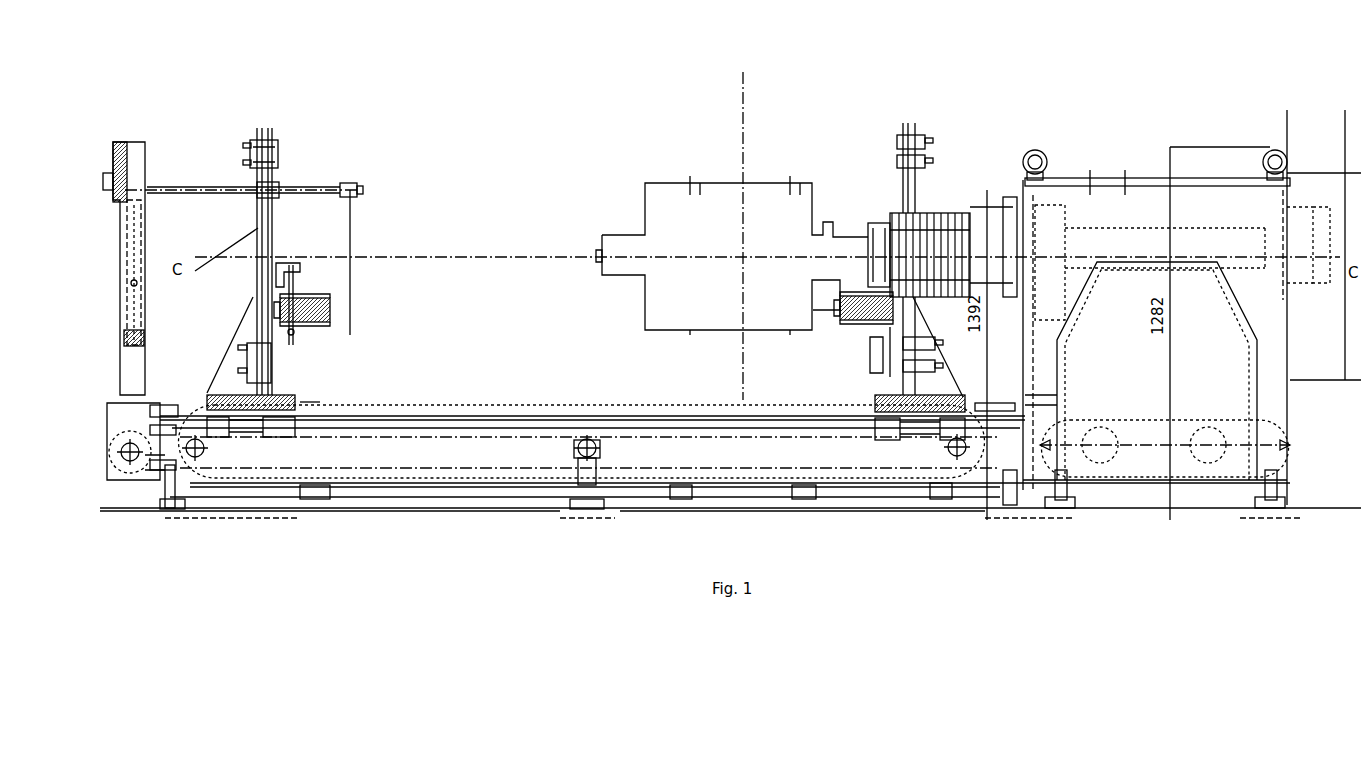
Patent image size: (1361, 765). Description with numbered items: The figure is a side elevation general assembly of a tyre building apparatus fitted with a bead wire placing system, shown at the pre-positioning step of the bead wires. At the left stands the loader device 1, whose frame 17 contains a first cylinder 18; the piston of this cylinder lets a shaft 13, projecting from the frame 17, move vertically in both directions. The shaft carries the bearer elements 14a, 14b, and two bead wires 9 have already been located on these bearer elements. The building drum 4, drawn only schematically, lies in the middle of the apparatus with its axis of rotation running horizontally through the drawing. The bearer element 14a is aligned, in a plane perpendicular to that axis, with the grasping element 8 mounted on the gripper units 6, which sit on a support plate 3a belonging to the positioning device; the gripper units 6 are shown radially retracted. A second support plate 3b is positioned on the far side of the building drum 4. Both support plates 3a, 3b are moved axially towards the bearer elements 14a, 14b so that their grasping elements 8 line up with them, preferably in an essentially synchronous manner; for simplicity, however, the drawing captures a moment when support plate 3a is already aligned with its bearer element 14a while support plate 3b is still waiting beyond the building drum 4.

The loader device 1 is at (195, 173).
The support plate 3a is at (249, 294).
The support plate 3b is at (908, 187).
The building drum 4 is at (757, 197).
The gripper units 6 is at (258, 140).
The grasping element 8 is at (273, 178).
The bead wires 9 is at (295, 232).
The shaft 13 is at (302, 280).
The bearer element 14a is at (272, 207).
The bearer element 14b is at (352, 183).
The frame 17 is at (130, 357).
The first cylinder 18 is at (133, 283).